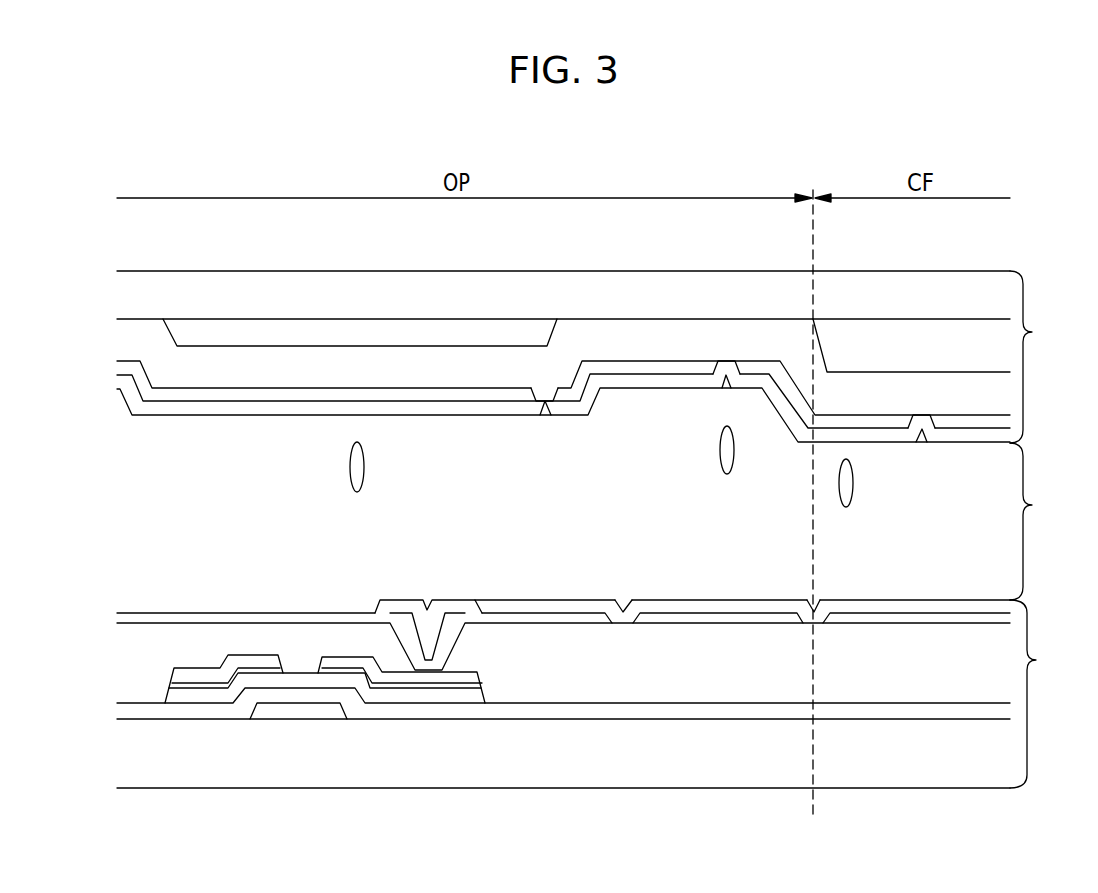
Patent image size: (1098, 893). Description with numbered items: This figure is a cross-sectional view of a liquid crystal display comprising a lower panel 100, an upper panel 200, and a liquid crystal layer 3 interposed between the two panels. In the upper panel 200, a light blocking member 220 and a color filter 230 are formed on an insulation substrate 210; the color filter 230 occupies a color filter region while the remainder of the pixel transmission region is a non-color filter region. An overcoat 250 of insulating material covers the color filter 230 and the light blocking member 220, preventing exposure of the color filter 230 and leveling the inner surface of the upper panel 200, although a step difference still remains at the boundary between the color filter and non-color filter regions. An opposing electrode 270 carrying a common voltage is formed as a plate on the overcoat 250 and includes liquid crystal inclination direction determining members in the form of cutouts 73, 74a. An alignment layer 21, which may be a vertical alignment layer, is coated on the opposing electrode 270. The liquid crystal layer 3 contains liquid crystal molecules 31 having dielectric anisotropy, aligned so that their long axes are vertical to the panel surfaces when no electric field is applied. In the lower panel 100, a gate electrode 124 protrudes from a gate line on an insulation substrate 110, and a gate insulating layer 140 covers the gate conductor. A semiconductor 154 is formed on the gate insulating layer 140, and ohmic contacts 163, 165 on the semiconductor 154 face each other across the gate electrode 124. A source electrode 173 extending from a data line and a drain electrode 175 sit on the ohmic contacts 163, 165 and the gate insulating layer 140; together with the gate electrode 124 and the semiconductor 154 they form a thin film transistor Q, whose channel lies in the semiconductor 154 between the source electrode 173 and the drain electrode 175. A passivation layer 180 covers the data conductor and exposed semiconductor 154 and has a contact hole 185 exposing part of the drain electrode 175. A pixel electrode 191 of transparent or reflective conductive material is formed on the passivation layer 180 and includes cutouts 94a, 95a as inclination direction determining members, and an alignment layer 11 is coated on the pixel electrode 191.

The insulation substrate 210 is at (177, 281).
The light blocking member 220 is at (398, 331).
The color filter 230 is at (898, 338).
The overcoat 250 is at (645, 348).
The opposing electrode 270 is at (613, 370).
The alignment layer 21 is at (195, 412).
The cutout 73 is at (528, 392).
The cutout 74a is at (708, 368).
The liquid crystal molecules 31 is at (367, 467).
The upper panel 200 is at (1044, 357).
The liquid crystal layer 3 is at (1032, 521).
The lower panel 100 is at (1046, 694).
The insulation substrate 110 is at (573, 776).
The gate electrode 124 is at (285, 716).
The gate insulating layer 140 is at (505, 711).
The semiconductor 154 is at (331, 686).
The ohmic contact 163 is at (208, 681).
The ohmic contact 165 is at (450, 686).
The source electrode 173 is at (188, 689).
The drain electrode 175 is at (338, 658).
The passivation layer 180 is at (636, 689).
The contact hole 185 is at (447, 643).
The pixel electrode 191 is at (703, 621).
The alignment layer 11 is at (173, 618).
The cutout 94a is at (645, 601).
The cutout 95a is at (835, 601).
The thin film transistor Q is at (302, 651).